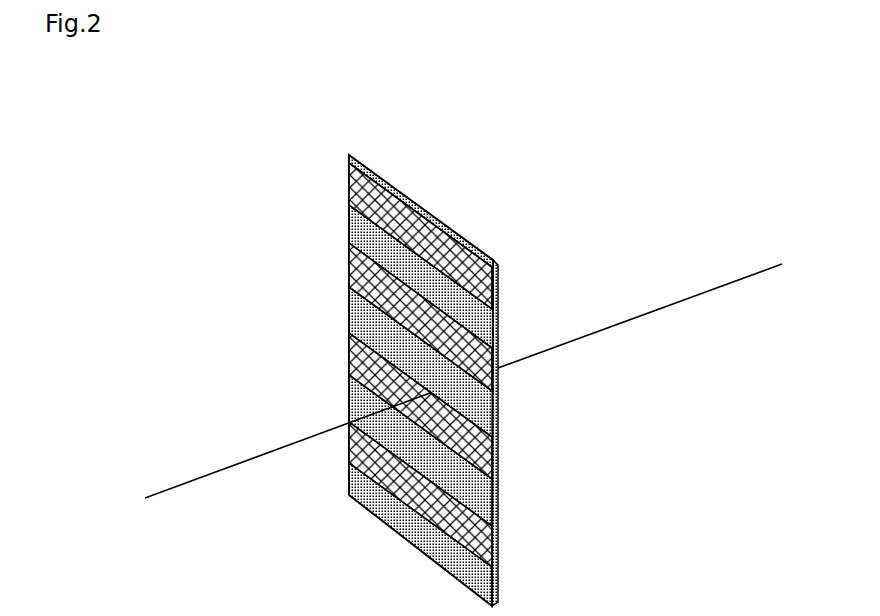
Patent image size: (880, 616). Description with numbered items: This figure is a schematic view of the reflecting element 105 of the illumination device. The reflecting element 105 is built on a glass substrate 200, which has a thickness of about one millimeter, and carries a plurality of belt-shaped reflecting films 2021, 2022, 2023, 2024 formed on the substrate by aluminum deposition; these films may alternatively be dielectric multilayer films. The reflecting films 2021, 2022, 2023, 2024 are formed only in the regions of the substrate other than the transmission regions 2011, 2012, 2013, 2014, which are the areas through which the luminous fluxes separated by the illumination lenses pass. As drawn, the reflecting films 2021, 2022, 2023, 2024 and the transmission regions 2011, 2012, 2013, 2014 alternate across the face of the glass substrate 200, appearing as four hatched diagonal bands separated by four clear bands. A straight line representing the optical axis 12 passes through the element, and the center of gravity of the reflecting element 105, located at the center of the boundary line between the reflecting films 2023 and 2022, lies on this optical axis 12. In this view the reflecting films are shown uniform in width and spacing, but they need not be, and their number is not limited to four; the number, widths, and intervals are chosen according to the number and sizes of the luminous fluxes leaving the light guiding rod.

The reflecting element 105 is at (421, 330).
The glass substrate 200 is at (455, 231).
The transmission region 2011 is at (348, 234).
The transmission region 2012 is at (348, 322).
The transmission region 2013 is at (348, 405).
The transmission region 2014 is at (347, 495).
The reflecting film 2021 is at (498, 287).
The reflecting film 2022 is at (498, 377).
The reflecting film 2023 is at (498, 463).
The reflecting film 2024 is at (498, 552).
The optical axis 12 is at (710, 290).